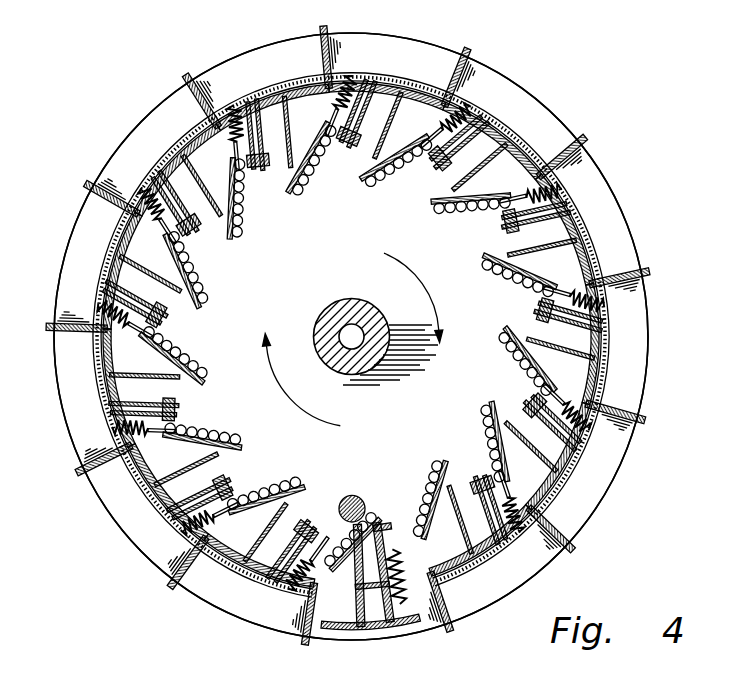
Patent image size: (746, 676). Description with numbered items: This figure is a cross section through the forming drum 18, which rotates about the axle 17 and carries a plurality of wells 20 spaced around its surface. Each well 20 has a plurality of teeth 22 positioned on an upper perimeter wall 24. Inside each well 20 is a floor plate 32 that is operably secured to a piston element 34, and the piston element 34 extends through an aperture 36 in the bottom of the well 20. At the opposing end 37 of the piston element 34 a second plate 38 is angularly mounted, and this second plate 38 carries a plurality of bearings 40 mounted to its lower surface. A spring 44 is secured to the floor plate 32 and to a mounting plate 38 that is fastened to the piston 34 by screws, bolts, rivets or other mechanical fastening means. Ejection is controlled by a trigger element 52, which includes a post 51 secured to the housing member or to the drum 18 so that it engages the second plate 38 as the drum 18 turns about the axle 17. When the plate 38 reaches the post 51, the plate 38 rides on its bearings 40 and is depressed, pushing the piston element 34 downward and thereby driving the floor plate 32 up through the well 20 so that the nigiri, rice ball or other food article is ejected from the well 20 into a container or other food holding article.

The forming drum 18 is at (146, 113).
The upper perimeter wall 24 is at (238, 58).
The well 20 is at (296, 78).
The teeth 22 is at (466, 52).
The floor plate 32 is at (458, 103).
The aperture 36 is at (511, 124).
The opposing end 37 is at (364, 172).
The piston element 34 is at (278, 182).
The bearings 40 is at (196, 279).
The second plate 38 is at (437, 182).
The spring 44 is at (516, 212).
The axle 17 is at (320, 318).
The post 51 is at (347, 492).
The trigger element 52 is at (358, 494).